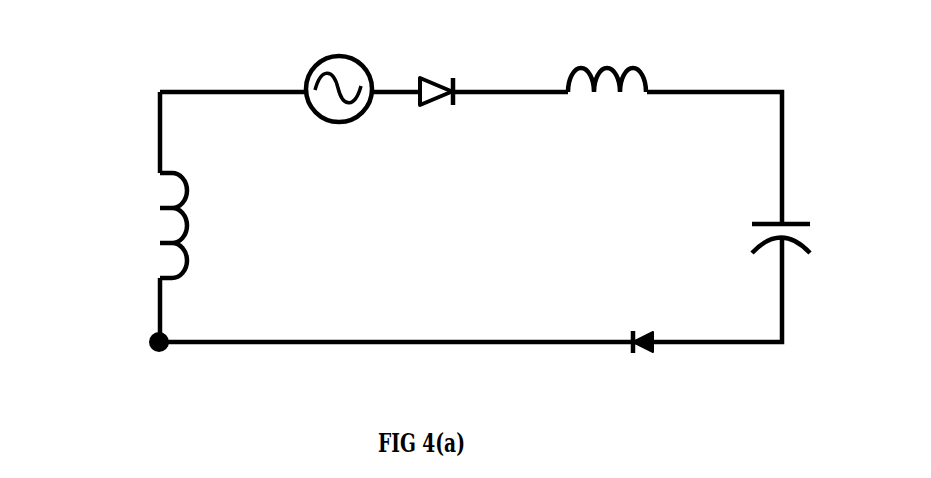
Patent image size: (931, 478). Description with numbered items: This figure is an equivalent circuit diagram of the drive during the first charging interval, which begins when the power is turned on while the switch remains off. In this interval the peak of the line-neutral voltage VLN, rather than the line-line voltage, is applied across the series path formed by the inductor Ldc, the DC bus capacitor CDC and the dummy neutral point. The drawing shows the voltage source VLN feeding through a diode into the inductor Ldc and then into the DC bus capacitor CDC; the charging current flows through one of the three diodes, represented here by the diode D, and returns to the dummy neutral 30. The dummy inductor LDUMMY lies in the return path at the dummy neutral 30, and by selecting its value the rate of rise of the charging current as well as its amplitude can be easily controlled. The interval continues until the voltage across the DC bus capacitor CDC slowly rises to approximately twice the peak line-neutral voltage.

The dummy neutral 30 is at (138, 363).
The diode D is at (645, 311).
The DC bus capacitor CDC is at (684, 234).
The inductor Ldc is at (593, 94).
The dummy inductor LDUMMY is at (108, 230).
The line-neutral voltage VLN is at (366, 142).